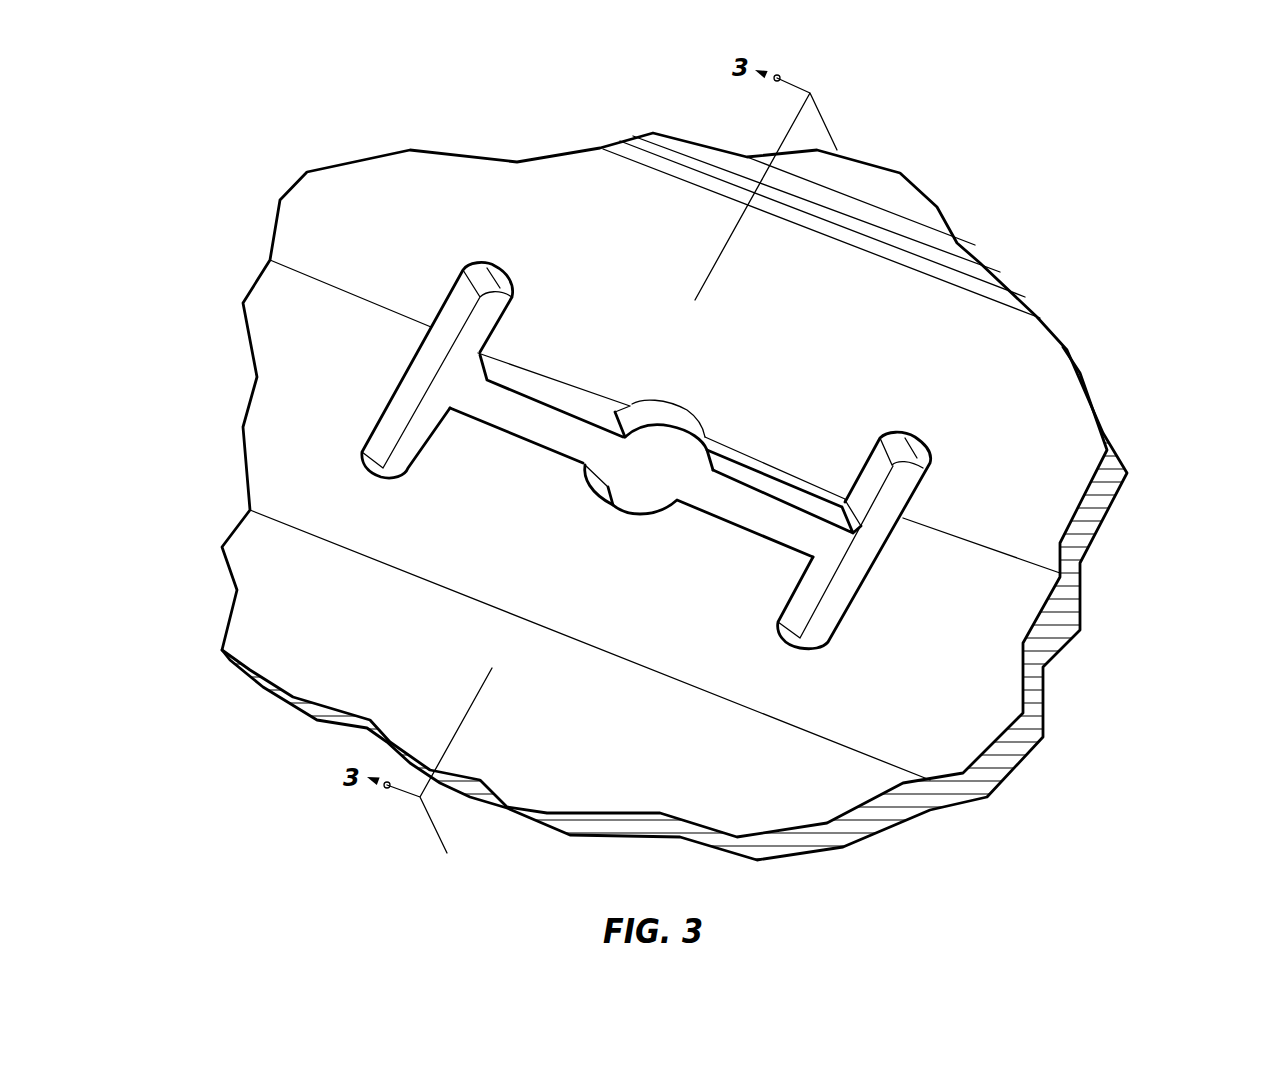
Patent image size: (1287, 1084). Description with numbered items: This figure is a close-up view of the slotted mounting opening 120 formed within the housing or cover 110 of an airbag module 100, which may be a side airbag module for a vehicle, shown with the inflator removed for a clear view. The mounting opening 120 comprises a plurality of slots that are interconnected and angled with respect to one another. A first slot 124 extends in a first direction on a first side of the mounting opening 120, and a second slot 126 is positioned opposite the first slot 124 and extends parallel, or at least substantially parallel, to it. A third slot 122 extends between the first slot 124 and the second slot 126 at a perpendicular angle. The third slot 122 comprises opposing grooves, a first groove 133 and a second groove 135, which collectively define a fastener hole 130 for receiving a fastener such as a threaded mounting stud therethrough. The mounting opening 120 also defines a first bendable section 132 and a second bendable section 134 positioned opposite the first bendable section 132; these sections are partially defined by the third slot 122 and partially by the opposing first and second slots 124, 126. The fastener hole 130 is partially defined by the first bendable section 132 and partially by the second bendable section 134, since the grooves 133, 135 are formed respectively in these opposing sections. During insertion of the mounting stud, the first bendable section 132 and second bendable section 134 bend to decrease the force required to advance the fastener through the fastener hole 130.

The airbag module 100 is at (722, 496).
The housing or cover 110 is at (1027, 331).
The mounting opening 120 is at (666, 410).
The third slot 122 is at (730, 530).
The first slot 124 is at (857, 557).
The second slot 126 is at (453, 385).
The fastener hole 130 is at (715, 362).
The first bendable section 132 is at (800, 477).
The first groove 133 is at (703, 420).
The second bendable section 134 is at (520, 452).
The second groove 135 is at (617, 512).